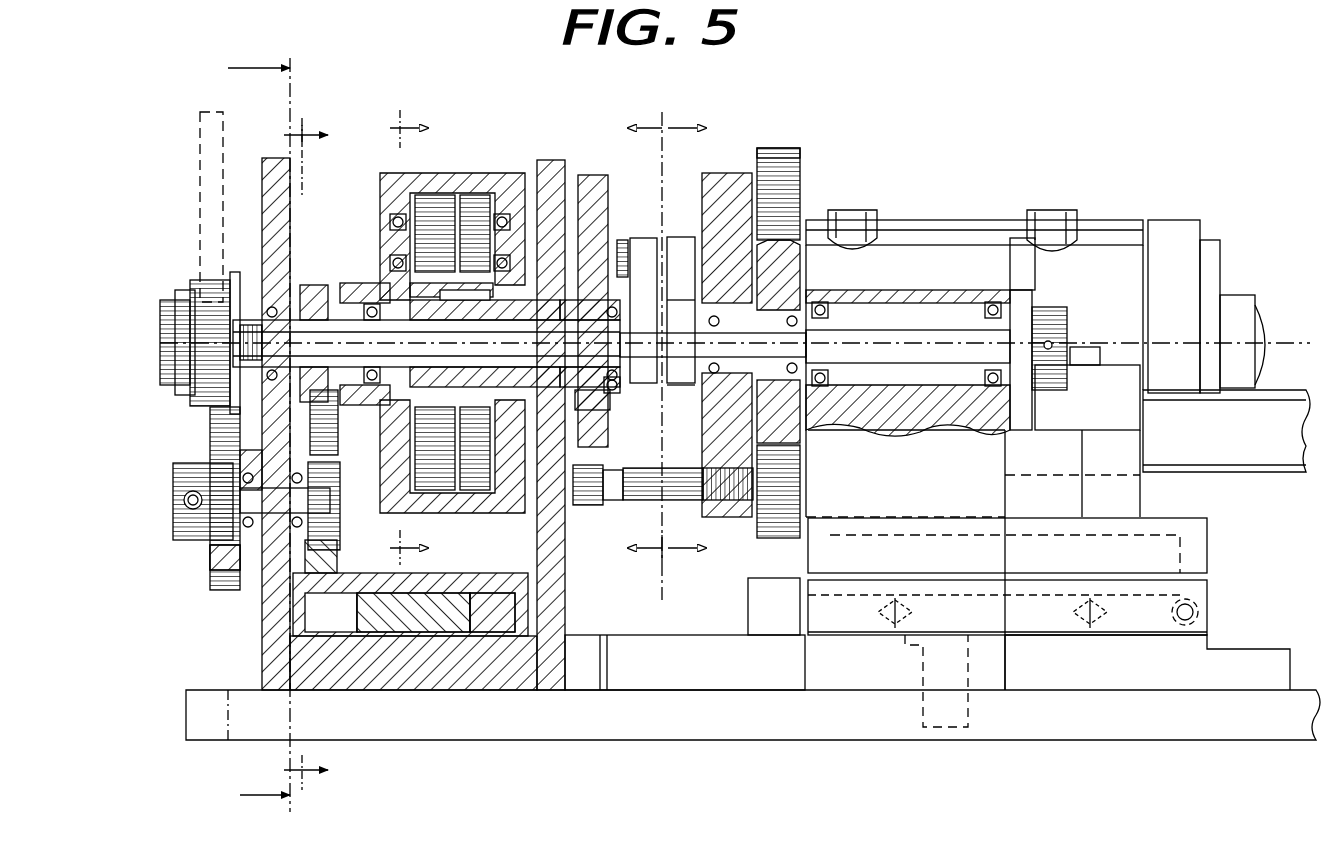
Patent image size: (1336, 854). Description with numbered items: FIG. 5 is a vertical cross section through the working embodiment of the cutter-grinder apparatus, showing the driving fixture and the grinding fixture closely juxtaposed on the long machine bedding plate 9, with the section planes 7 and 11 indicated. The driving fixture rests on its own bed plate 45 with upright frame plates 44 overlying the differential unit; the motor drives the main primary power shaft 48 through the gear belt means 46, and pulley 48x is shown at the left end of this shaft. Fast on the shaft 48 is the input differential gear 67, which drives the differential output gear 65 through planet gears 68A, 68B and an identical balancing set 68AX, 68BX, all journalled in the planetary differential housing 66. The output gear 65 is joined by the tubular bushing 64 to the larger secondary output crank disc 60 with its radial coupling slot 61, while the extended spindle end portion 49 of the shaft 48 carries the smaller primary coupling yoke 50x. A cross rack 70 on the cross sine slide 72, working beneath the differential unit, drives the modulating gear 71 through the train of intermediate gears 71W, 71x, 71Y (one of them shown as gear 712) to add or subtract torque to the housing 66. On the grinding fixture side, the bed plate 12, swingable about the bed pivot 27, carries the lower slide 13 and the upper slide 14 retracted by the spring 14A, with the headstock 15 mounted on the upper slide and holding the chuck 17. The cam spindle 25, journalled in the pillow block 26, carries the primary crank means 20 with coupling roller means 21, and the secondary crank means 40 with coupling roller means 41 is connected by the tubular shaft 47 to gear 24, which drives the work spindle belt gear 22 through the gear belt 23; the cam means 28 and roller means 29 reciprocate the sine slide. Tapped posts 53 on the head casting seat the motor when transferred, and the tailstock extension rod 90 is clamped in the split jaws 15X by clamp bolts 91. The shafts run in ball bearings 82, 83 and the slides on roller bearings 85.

The section line 7- 7 is at (242, 434).
The long machine bedding plate 9 is at (806, 726).
The section line 11- 11 is at (320, 451).
The bed plate 12 is at (1256, 676).
The lower or longitudinal slide 13 is at (1238, 568).
The upper or transverse slide 14 is at (1200, 532).
The spring 14A is at (1200, 604).
The headstock 15 is at (938, 220).
The split clamping jaws 15X is at (1128, 412).
The chuck 17 is at (1270, 315).
The primary crank means 20 is at (680, 237).
The coupling roller means 21 is at (624, 240).
The belt gear 22 is at (804, 175).
The gear belt 23 is at (778, 148).
The gear 24 is at (800, 262).
The cam spindle 25 is at (912, 355).
The pillow block 26 is at (923, 290).
The bed pivot 27 is at (918, 735).
The cam means 28 is at (1022, 300).
The roller means 29 is at (1030, 260).
The secondary crank means 40 is at (720, 173).
The coupling roller means 41 is at (600, 478).
The rigid frame means 44 is at (272, 158).
The bed plate 45 is at (455, 690).
The gear belt means 46 is at (200, 216).
The tubular shaft or bushing 47 is at (768, 322).
The main primary power shaft 48 is at (318, 355).
The pulley 48x is at (158, 322).
The primary output shaft means 49 is at (622, 336).
The yoke 50x is at (618, 390).
The tapped posts 53 is at (852, 212).
The secondary output crank disc 60 is at (600, 425).
The radial coupling slot 61 is at (594, 175).
The tubular bushing 64 is at (545, 312).
The differential output gear 65 is at (466, 312).
The planetary differential housing 66 is at (470, 173).
The input differential gear 67 is at (428, 305).
The planet gear 68A is at (432, 200).
The planet gear 68B is at (478, 200).
The planet gear 68AX is at (450, 480).
The planet gear 68BX is at (472, 480).
The cross rack 70 is at (338, 555).
The differential modulating gear 71 is at (316, 285).
The intermediate gear 71Y is at (210, 275).
The intermediate gear 71x is at (210, 578).
The intermediate gear 71W is at (318, 484).
The gear 712 is at (324, 422).
The cross sine slide 72 is at (460, 573).
The ball bearing 82 is at (372, 302).
The ball bearing 83 is at (388, 222).
The roller bearing 85 is at (455, 608).
The cylindrical extension rod 90 is at (1278, 424).
The clamp bolts 91 is at (1088, 347).